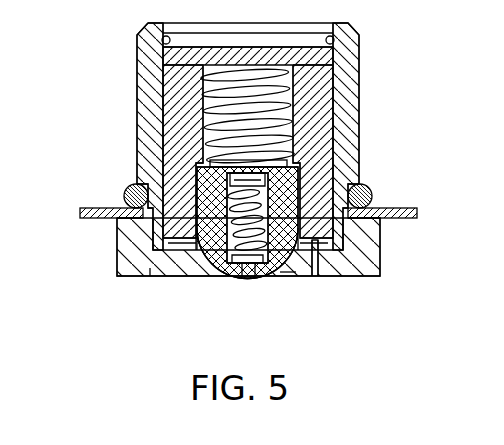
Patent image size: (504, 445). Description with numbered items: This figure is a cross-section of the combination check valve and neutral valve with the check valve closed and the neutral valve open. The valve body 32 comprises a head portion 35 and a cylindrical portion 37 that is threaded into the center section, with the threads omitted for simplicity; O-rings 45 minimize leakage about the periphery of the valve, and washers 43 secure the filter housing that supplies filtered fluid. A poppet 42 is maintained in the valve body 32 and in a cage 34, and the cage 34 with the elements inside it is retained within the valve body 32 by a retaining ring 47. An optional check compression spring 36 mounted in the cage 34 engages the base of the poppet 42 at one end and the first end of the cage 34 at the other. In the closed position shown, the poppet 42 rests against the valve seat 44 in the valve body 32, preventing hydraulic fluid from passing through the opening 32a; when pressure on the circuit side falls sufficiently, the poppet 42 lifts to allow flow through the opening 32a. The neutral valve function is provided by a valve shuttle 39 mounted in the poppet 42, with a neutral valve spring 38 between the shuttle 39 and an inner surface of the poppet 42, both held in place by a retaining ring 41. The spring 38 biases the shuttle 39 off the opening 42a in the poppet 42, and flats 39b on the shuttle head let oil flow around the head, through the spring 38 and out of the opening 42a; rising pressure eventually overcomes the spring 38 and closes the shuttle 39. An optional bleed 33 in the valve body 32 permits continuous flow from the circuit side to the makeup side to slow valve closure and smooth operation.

The valve body 32 is at (381, 277).
The opening 32a is at (290, 274).
The bleed 33 is at (318, 274).
The cage 34 is at (182, 82).
The head portion 35 is at (381, 242).
The check compression spring 36 is at (285, 100).
The cylindrical portion 37 is at (361, 70).
The neutral valve spring 38 is at (200, 252).
The valve shuttle 39 is at (220, 266).
The flats 39b is at (150, 274).
The retaining ring 41 is at (200, 178).
The poppet 42 is at (345, 173).
The opening 42a is at (248, 278).
The washers 43 is at (80, 213).
The valve seat 44 is at (268, 265).
The O-rings 45 is at (126, 190).
The retaining ring 47 is at (334, 36).